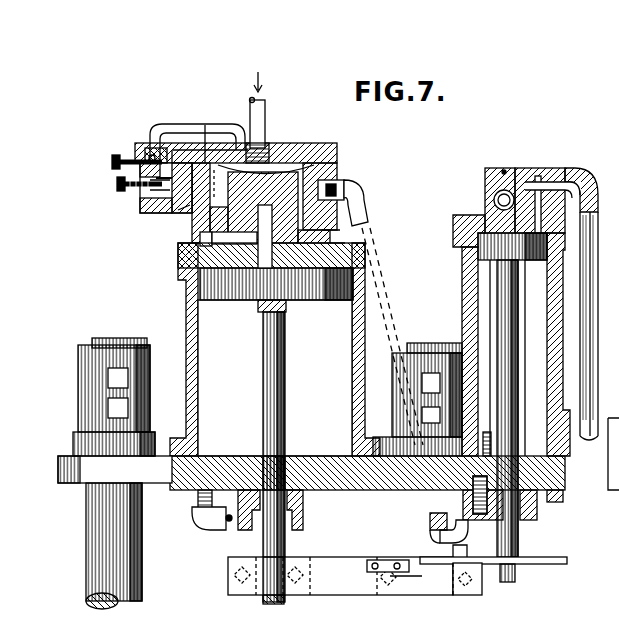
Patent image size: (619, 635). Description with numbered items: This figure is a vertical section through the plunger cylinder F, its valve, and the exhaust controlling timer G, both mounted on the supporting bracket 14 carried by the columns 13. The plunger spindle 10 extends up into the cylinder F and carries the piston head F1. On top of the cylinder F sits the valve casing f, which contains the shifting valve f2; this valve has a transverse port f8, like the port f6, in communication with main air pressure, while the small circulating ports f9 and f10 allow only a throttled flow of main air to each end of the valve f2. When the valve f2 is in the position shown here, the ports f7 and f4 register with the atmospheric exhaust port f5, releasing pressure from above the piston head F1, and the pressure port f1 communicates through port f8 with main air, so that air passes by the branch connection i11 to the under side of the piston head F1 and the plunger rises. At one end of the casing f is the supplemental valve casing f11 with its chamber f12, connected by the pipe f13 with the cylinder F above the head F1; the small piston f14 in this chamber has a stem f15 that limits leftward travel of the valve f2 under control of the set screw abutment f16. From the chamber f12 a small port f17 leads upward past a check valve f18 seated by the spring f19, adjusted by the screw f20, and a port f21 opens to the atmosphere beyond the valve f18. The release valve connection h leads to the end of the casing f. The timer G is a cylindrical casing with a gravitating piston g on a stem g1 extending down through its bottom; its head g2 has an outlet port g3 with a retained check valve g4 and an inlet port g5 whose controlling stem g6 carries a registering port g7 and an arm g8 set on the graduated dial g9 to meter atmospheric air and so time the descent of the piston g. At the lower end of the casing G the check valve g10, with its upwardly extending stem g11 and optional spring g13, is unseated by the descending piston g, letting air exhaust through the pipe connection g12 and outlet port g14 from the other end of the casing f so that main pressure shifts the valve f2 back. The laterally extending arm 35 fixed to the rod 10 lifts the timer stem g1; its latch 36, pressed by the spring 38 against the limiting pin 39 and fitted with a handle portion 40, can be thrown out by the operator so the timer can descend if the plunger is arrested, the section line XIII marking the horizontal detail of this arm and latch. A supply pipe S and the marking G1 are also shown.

The valve casing f is at (300, 157).
The pressure port f1 is at (180, 258).
The shifting valve f2 is at (282, 150).
The exhaust port f4 is at (262, 275).
The atmospheric exhaust port f5 is at (236, 272).
The transverse pressure port f6 is at (340, 183).
The pressure port to cylinder f7 is at (333, 233).
The transverse port f8 is at (262, 160).
The small circulating port f9 is at (318, 160).
The small circulating port f10 is at (208, 133).
The supplemental valve casing f11 is at (143, 207).
The chamber f12 is at (156, 175).
The pipe f13 is at (200, 165).
The small piston f14 is at (178, 208).
The piston stem f15 is at (222, 238).
The set screw abutment f16 is at (117, 185).
The small port f17 is at (210, 122).
The check valve f18 is at (172, 150).
The spring f19 is at (152, 155).
The adjusting screw f20 is at (112, 160).
The atmospheric port f21 is at (150, 132).
The plunger cylinder F is at (275, 349).
The piston head F1 is at (322, 312).
The supply pipe S is at (265, 112).
The release valve connection pipe h is at (200, 238).
The timer piston g is at (478, 258).
The piston stem g1 is at (498, 325).
The timer head g2 is at (486, 192).
The outlet port g3 is at (455, 216).
The check valve g4 is at (506, 190).
The inlet port g5 is at (540, 178).
The controlling stem g6 is at (592, 190).
The registering port g7 is at (572, 182).
The arm g8 is at (600, 398).
The graduated dial g9 is at (608, 522).
The check valve g10 is at (538, 478).
The valve stem g11 is at (486, 440).
The pipe connection g12 is at (365, 210).
The spring g13 is at (490, 505).
The outlet port g14 is at (540, 497).
The timer G is at (462, 297).
The housing wall G1 is at (618, 296).
The branch pipe i11 is at (200, 512).
The spindle 10 is at (262, 596).
The columns 13 is at (84, 548).
The supporting bracket 14 is at (60, 468).
The arm 35 is at (338, 595).
The latch 36 is at (488, 576).
The spring 38 is at (405, 578).
The limiting pin 39 is at (453, 548).
The handle portion 40 is at (556, 566).
The section line XIII is at (214, 556).